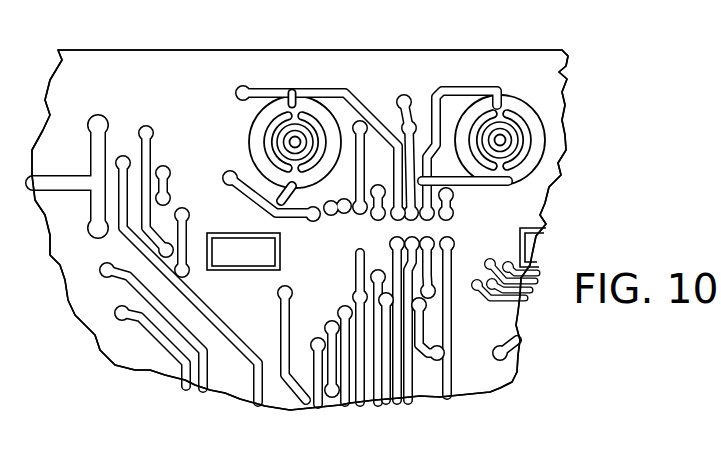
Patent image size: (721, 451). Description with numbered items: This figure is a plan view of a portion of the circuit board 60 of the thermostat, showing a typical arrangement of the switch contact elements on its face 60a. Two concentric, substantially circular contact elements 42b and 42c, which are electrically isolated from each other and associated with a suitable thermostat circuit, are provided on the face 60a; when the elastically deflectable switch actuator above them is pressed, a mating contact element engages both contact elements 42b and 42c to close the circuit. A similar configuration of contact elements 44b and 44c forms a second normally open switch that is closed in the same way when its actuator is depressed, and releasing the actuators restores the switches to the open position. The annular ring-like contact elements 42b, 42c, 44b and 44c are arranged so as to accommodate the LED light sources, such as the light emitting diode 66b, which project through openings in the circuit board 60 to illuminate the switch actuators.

The circuit board 60 is at (310, 50).
The face of circuit board 60a is at (132, 77).
The contact element 42b is at (283, 132).
The contact element 42c is at (318, 122).
The contact element 44b is at (543, 124).
The contact element 44c is at (522, 112).
The light emitting diode 66b is at (268, 128).